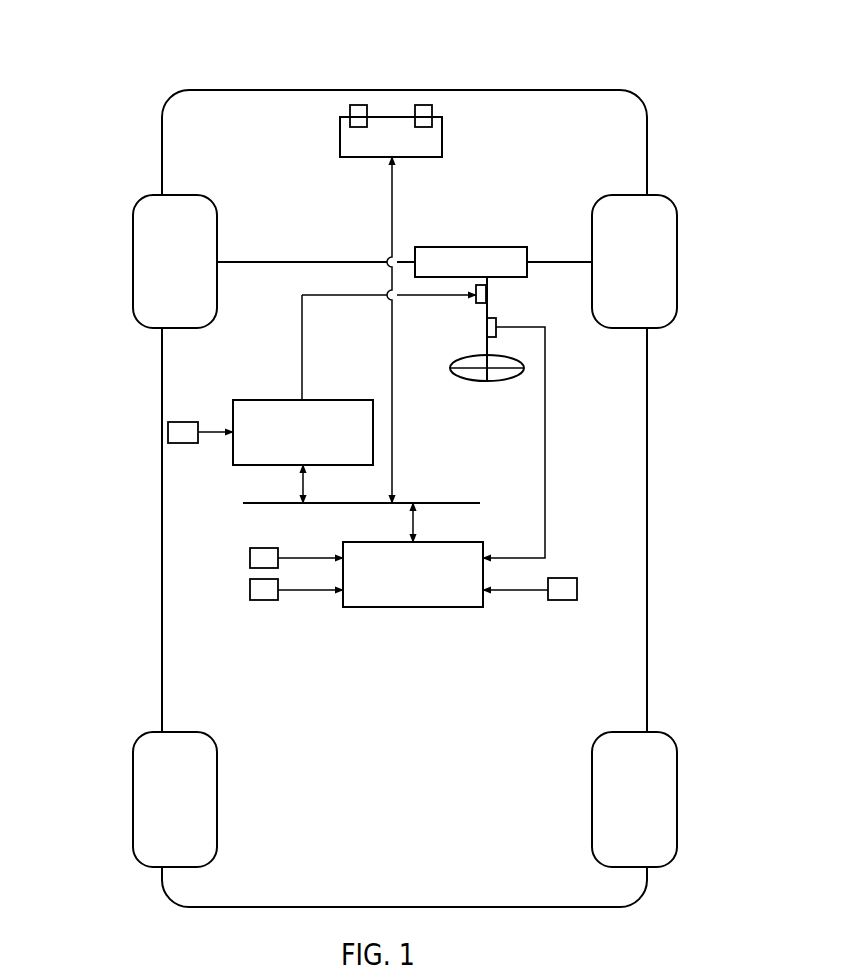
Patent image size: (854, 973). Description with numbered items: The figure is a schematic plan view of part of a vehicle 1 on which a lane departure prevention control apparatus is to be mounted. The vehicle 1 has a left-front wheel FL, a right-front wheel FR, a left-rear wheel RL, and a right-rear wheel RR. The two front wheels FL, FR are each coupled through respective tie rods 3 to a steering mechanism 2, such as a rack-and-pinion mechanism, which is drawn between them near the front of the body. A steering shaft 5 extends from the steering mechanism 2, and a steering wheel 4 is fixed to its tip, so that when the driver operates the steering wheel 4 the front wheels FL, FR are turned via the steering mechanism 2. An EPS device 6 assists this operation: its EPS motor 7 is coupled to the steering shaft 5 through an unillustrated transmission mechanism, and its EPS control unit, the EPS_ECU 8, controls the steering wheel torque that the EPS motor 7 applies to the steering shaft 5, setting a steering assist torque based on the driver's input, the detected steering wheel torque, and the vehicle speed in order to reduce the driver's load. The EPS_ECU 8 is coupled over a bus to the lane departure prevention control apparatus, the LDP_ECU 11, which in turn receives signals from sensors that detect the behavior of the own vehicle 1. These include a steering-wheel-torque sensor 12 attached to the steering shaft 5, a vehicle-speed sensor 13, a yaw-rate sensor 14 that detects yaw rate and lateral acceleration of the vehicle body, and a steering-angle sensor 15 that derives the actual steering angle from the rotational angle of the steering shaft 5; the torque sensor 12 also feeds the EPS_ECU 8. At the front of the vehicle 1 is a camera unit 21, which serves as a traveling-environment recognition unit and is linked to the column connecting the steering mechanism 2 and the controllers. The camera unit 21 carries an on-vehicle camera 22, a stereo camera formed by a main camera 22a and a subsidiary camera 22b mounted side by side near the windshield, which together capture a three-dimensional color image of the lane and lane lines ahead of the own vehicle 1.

The vehicle 1 is at (553, 70).
The steering mechanism 2 is at (470, 247).
The tie rods 3 is at (282, 260).
The steering wheel 4 is at (487, 383).
The steering shaft 5 is at (485, 347).
The EPS device 6 is at (277, 343).
The EPS motor 7 is at (474, 297).
The EPS control unit (EPS_ECU) 8 is at (274, 399).
The lane departure prevention control apparatus (LDP_ECU) 11 is at (413, 607).
The steering-wheel-torque sensor 12 is at (494, 320).
The vehicle-speed sensor 13 is at (250, 590).
The yaw-rate sensor 14 is at (250, 558).
The steering-angle sensor 15 is at (578, 589).
The camera unit 21 is at (340, 137).
The on-vehicle camera 22 is at (388, 63).
The main camera 22a is at (420, 81).
The subsidiary camera 22b is at (358, 105).
The left-front wheel FL is at (133, 250).
The right-front wheel FR is at (677, 262).
The left-rear wheel RL is at (133, 787).
The right-rear wheel RR is at (677, 797).